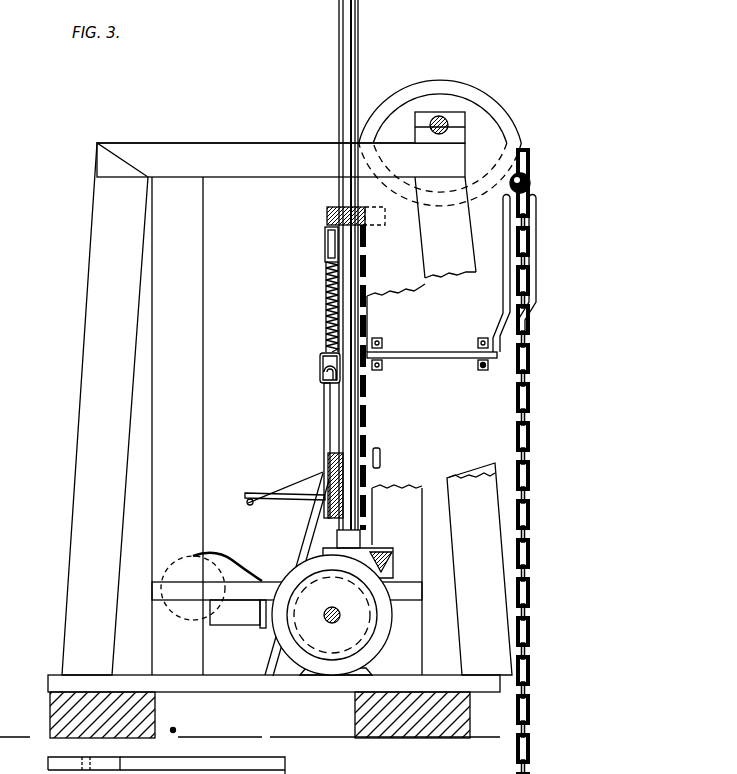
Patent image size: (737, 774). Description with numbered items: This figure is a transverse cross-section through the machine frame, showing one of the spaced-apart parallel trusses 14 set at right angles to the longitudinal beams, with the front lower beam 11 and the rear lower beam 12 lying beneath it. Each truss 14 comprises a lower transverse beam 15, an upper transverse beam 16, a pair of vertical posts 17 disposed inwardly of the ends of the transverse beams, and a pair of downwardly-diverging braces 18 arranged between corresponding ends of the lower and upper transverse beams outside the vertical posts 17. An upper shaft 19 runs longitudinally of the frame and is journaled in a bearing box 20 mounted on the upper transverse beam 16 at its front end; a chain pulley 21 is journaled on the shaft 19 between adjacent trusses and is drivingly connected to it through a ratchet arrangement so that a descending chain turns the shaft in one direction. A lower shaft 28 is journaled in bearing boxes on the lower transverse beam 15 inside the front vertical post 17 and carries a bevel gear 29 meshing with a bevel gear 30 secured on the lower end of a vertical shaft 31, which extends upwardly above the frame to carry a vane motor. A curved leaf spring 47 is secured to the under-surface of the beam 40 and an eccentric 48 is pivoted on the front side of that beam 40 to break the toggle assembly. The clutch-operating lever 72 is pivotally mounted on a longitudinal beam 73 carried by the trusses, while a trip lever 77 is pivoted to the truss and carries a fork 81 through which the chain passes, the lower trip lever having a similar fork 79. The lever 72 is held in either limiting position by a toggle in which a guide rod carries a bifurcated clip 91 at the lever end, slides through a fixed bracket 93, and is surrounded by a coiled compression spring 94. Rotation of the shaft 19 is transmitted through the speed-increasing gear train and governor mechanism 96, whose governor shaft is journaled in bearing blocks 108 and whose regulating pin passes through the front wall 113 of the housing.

The lower beam 11 is at (355, 716).
The lower beam 12 is at (50, 716).
The truss 14 is at (97, 144).
The lower transverse beam 15 is at (229, 570).
The upper transverse beam 16 is at (273, 141).
The vertical post 17 is at (203, 430).
The brace 18 is at (76, 446).
The upper shaft 19 is at (432, 117).
The bearing box 20 is at (455, 117).
The chain pulley 21 is at (473, 46).
The lower shaft 28 is at (328, 612).
The bevel gear 29 is at (291, 568).
The bevel gear 30 is at (400, 546).
The vertical shaft 31 is at (347, 428).
The beam 40 is at (235, 611).
The curved leaf spring 47 is at (237, 556).
The eccentric 48 is at (264, 628).
The clutch-operating lever 72 is at (324, 402).
The beam 73 is at (328, 461).
The trip lever 77 is at (460, 354).
The fork 79 is at (380, 452).
The fork 81 is at (504, 229).
The bifurcated clip 91 is at (320, 366).
The fixed bracket 93 is at (325, 250).
The coiled compression spring 94 is at (326, 299).
The speed-increasing gear train and governor mechanism 96 is at (326, 281).
The bearing block 108 is at (48, 764).
The front wall 113 is at (172, 750).